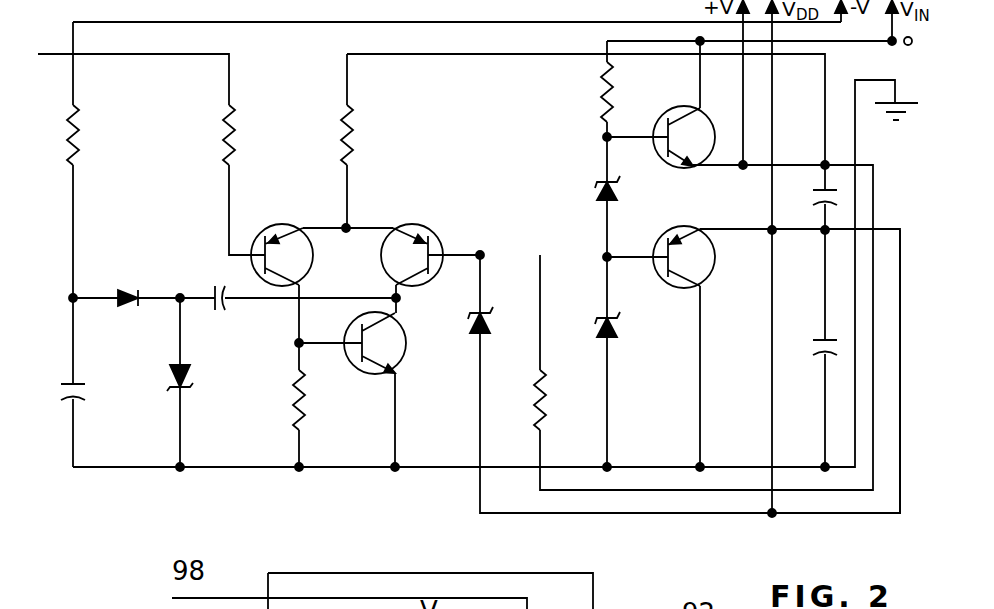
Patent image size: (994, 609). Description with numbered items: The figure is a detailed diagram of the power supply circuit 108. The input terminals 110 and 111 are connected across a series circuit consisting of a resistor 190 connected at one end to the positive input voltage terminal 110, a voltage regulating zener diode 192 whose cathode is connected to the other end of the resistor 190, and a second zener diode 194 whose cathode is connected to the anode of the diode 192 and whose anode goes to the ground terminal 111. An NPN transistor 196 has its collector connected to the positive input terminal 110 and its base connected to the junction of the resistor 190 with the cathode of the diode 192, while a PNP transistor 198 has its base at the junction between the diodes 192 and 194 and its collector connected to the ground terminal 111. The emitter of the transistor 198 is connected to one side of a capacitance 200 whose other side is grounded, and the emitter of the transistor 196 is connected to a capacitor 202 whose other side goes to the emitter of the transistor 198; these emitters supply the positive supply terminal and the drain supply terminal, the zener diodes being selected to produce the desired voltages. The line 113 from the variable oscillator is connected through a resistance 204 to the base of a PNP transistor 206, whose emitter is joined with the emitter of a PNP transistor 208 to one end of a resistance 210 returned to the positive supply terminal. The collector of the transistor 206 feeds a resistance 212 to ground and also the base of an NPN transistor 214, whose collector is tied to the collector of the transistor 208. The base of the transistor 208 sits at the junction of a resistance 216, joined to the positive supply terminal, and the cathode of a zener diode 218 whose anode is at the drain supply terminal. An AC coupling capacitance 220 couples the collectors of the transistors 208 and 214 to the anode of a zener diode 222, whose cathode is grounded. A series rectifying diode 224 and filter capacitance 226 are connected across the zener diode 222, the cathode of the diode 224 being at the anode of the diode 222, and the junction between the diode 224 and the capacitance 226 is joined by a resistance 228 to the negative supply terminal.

The power supply circuit 108 is at (802, 525).
The positive input voltage terminal 110 is at (907, 46).
The ground terminal 111 is at (893, 90).
The line 113 is at (125, 57).
The resistor 190 is at (601, 85).
The zener diode 192 is at (598, 194).
The zener diode 194 is at (598, 333).
The NPN transistor 196 is at (664, 168).
The PNP transistor 198 is at (660, 285).
The capacitance 200 is at (812, 343).
The capacitor 202 is at (810, 200).
The resistance 204 is at (236, 140).
The PNP transistor 206 is at (260, 226).
The PNP transistor 208 is at (437, 229).
The resistance 210 is at (354, 140).
The resistance 212 is at (305, 403).
The NPN transistor 214 is at (405, 358).
The resistance 216 is at (547, 396).
The zener diode 218 is at (468, 324).
The AC coupling capacitance 220 is at (221, 312).
The zener diode 222 is at (192, 378).
The rectifying diode 224 is at (123, 291).
The filter capacitance 226 is at (85, 392).
The resistance 228 is at (80, 138).